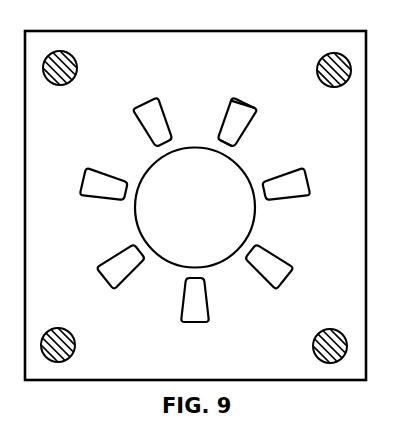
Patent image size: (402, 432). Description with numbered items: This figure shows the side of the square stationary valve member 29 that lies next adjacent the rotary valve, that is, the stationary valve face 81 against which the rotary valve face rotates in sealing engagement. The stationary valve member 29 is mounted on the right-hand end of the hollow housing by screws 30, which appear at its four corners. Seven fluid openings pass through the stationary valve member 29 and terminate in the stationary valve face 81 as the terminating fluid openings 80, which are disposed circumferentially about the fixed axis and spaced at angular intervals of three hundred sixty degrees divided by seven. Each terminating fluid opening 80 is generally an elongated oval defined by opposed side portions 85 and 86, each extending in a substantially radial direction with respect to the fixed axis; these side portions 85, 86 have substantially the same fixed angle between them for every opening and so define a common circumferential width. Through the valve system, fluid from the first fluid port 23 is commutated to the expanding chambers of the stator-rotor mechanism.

The stationary valve member 29 is at (208, 31).
The screws 30 is at (58, 53).
The terminating fluid openings 80 is at (295, 177).
The stationary valve face 81 is at (146, 348).
The side portion 85 is at (247, 115).
The side portion 86 is at (245, 127).
The first fluid port 23 is at (13, 419).